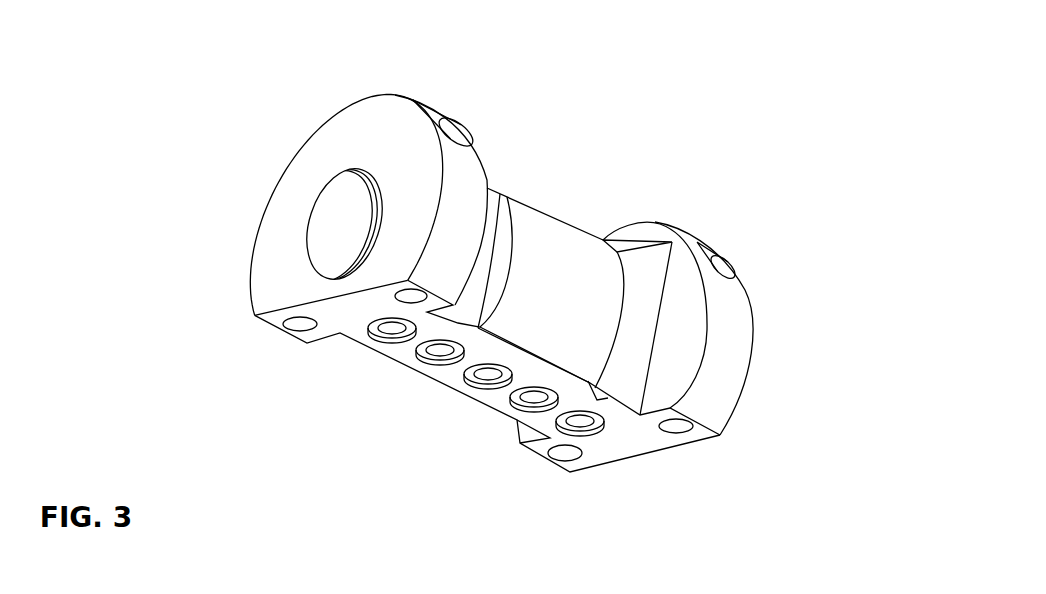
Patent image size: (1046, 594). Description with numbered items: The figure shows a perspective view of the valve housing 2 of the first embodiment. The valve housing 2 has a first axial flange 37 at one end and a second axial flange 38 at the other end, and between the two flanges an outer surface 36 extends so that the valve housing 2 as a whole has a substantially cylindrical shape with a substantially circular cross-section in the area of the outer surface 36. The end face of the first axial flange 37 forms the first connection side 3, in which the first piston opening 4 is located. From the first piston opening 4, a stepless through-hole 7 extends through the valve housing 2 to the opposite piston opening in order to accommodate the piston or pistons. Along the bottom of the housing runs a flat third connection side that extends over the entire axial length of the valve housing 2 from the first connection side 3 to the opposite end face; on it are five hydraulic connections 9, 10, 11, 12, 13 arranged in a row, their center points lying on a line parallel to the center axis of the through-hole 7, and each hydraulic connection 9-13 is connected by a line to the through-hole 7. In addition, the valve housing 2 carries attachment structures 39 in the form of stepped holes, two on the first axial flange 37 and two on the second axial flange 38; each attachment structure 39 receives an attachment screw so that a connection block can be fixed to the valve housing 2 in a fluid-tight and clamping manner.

The valve housing 2 is at (185, 178).
The first connection side 3 is at (369, 118).
The first piston opening 4 is at (315, 203).
The stepless through-hole 7 is at (345, 217).
The hydraulic connection 9 is at (366, 323).
The hydraulic connection 10 is at (415, 352).
The hydraulic connection 11 is at (465, 371).
The hydraulic connection 12 is at (512, 398).
The hydraulic connection 13 is at (560, 422).
The outer surface 36 is at (541, 240).
The first axial flange 37 is at (453, 167).
The second axial flange 38 is at (717, 300).
The attachment structure 39 is at (432, 128).